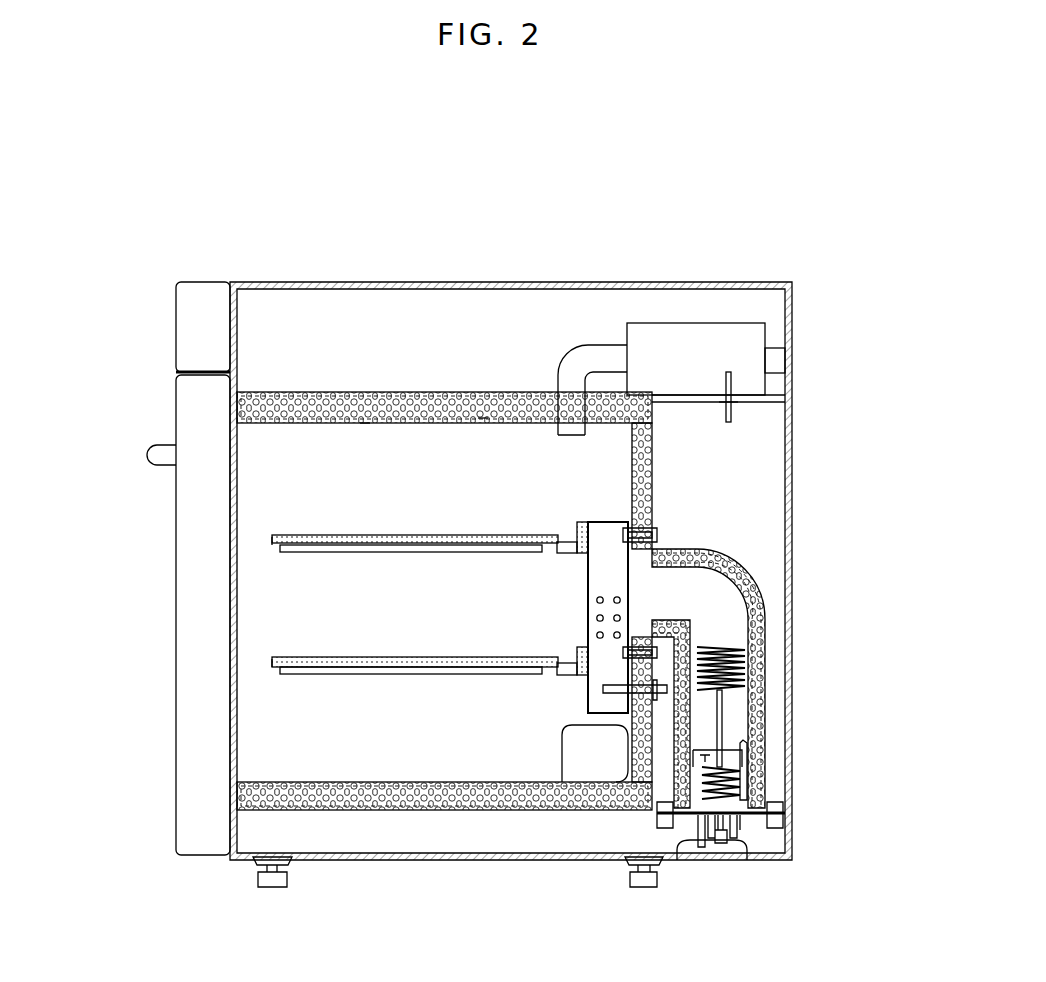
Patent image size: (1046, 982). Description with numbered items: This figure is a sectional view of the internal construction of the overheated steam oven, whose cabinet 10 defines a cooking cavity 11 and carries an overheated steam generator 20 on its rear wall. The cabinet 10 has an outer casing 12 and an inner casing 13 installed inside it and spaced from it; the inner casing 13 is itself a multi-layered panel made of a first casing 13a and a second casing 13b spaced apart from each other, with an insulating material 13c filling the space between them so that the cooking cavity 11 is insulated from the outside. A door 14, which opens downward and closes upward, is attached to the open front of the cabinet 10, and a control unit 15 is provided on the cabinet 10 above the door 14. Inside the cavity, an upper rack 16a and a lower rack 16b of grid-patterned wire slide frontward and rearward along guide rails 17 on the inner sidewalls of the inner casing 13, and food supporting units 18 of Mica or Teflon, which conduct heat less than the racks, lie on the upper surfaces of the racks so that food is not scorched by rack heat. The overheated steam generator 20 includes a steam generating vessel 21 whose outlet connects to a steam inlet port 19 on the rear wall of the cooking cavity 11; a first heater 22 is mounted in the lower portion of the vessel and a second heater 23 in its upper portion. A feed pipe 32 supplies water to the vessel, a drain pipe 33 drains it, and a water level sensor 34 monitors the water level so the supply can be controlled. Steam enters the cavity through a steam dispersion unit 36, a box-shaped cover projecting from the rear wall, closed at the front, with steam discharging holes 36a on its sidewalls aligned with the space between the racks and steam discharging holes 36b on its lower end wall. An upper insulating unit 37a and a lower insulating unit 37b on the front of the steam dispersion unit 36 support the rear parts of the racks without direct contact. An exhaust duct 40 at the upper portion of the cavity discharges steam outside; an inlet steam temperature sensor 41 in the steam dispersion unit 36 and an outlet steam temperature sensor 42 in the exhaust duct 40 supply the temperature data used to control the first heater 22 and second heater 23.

The cabinet 10 is at (478, 549).
The cooking cavity 11 is at (440, 603).
The outer casing 12 is at (387, 283).
The inner casing 13 is at (444, 505).
The first casing 13a is at (365, 423).
The second casing 13b is at (432, 392).
The insulating material 13c is at (483, 418).
The door 14 is at (187, 655).
The control unit 15 is at (180, 334).
The upper rack 16a is at (272, 545).
The lower rack 16b is at (272, 675).
The guide rails 17 is at (460, 552).
The food supporting units 18 is at (318, 535).
The steam inlet port 19 is at (590, 630).
The overheated steam generator 20 is at (764, 708).
The steam generating vessel 21 is at (768, 636).
The first heater 22 is at (770, 790).
The second heater 23 is at (745, 690).
The feed pipe 32 is at (732, 842).
The drain pipe 33 is at (677, 852).
The water level sensor 34 is at (768, 725).
The steam dispersion unit 36 is at (615, 617).
The steam discharging holes 36a is at (620, 600).
The steam discharging holes 36b is at (562, 730).
The upper insulating unit 37a is at (578, 522).
The lower insulating unit 37b is at (565, 675).
The exhaust duct 40 is at (608, 353).
The inlet steam temperature sensor 41 is at (613, 713).
The outlet steam temperature sensor 42 is at (728, 378).